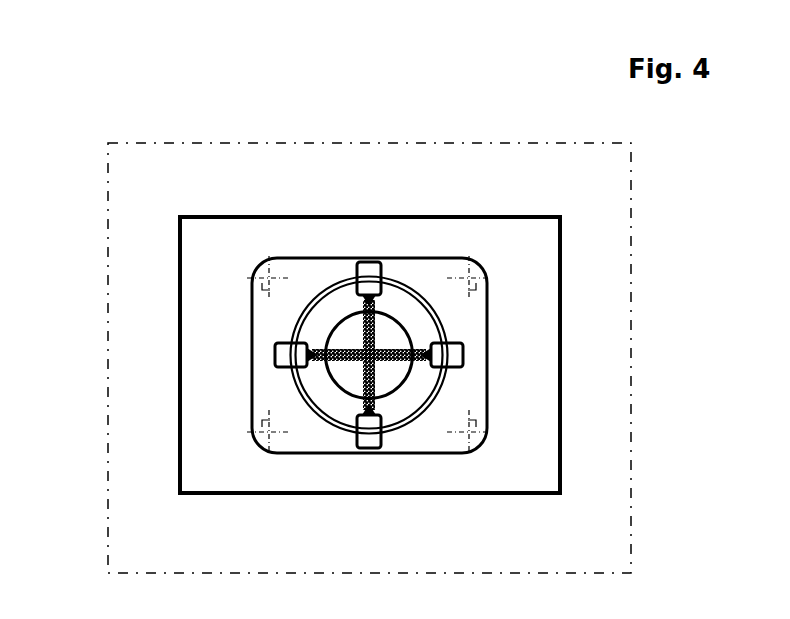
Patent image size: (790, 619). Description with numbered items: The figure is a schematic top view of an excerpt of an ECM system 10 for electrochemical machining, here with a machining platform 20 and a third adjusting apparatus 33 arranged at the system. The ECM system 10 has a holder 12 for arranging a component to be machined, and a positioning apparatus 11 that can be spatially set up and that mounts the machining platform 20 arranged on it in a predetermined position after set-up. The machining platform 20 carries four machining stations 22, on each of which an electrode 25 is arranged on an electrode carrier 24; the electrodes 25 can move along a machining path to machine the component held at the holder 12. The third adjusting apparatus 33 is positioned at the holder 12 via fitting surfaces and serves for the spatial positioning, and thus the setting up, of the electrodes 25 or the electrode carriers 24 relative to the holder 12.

The ECM system 10 is at (107, 272).
The positioning apparatus 11 is at (458, 423).
The holder 12 is at (395, 333).
The machining platform 20 is at (311, 290).
The machining station 22 is at (373, 288).
The electrode carrier 24 is at (388, 282).
The electrode 25 is at (465, 308).
The third adjusting apparatus 33 is at (392, 408).